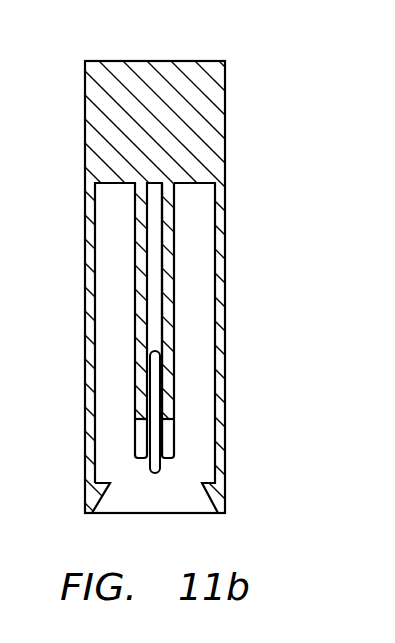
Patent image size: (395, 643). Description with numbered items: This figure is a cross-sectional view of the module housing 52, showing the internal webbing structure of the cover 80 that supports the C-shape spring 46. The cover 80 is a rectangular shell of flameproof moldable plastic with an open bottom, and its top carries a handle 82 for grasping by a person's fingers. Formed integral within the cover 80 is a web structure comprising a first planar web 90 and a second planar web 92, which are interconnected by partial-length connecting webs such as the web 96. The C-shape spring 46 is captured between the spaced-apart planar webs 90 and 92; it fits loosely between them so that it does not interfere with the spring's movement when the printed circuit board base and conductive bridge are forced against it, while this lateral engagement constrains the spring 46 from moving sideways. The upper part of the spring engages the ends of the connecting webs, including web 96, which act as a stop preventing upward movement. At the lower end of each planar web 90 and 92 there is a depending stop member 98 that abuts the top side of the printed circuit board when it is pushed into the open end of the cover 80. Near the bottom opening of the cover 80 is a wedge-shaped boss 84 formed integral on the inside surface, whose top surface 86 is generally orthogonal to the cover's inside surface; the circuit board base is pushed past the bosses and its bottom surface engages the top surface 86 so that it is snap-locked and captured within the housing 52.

The module housing 52 is at (197, 321).
The cover 80 is at (228, 361).
The top handle 82 is at (140, 60).
The wedge-shaped boss 84 is at (105, 513).
The top surface of boss 86 is at (110, 483).
The first planar web 90 is at (177, 290).
The second planar web 92 is at (134, 306).
The partial-length connecting web 96 is at (153, 238).
The stop member 98 is at (178, 437).
The C-shape spring 46 is at (150, 468).